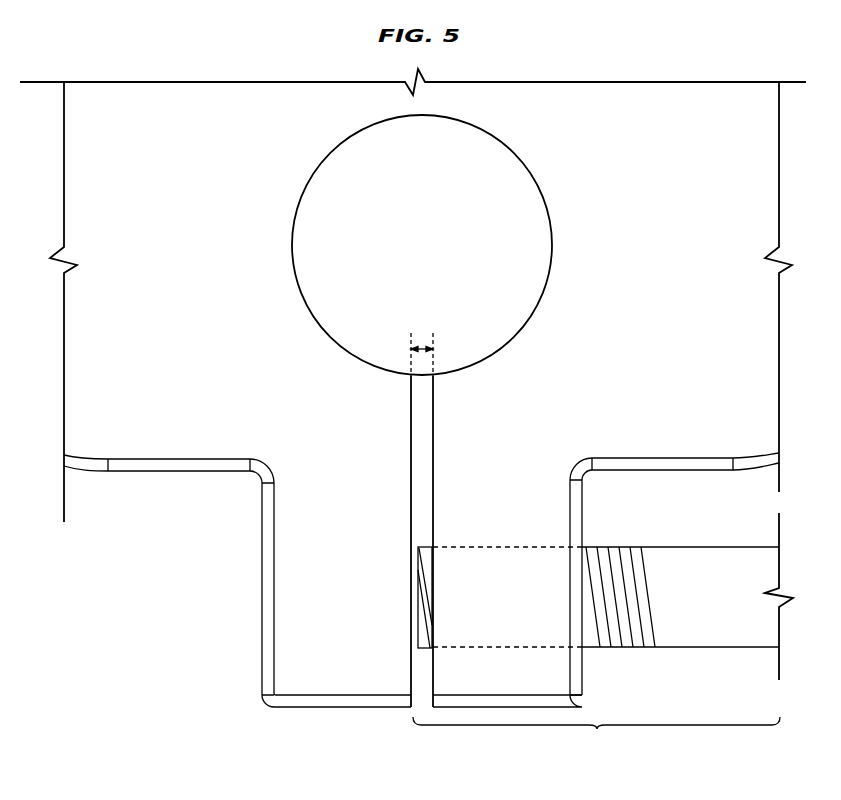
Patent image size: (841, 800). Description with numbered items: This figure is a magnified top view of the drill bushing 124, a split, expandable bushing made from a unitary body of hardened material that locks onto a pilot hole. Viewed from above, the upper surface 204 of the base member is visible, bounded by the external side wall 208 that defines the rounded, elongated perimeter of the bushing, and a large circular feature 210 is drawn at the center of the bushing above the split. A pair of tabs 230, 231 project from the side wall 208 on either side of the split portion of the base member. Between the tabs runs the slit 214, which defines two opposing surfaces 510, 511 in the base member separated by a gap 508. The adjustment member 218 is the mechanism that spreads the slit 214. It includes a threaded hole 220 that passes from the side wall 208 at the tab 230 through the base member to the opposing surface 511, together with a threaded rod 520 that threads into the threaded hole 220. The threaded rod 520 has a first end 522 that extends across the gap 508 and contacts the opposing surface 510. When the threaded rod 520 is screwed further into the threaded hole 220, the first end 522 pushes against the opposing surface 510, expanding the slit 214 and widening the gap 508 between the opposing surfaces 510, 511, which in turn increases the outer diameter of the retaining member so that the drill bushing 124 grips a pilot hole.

The drill bushing 124 is at (700, 63).
The upper surface 204 is at (201, 115).
The cylindrical bead 210 is at (500, 188).
The gap 508 is at (424, 346).
The opposing surface 510 is at (416, 463).
The opposing surface 511 is at (428, 488).
The threaded hole 220 is at (513, 550).
The side wall 208 is at (582, 503).
The threaded rod 520 is at (726, 565).
The first end 522 is at (417, 583).
The tab 231 is at (300, 660).
The tab 230 is at (515, 682).
The slit 214 is at (422, 680).
The adjustment member 218 is at (596, 735).